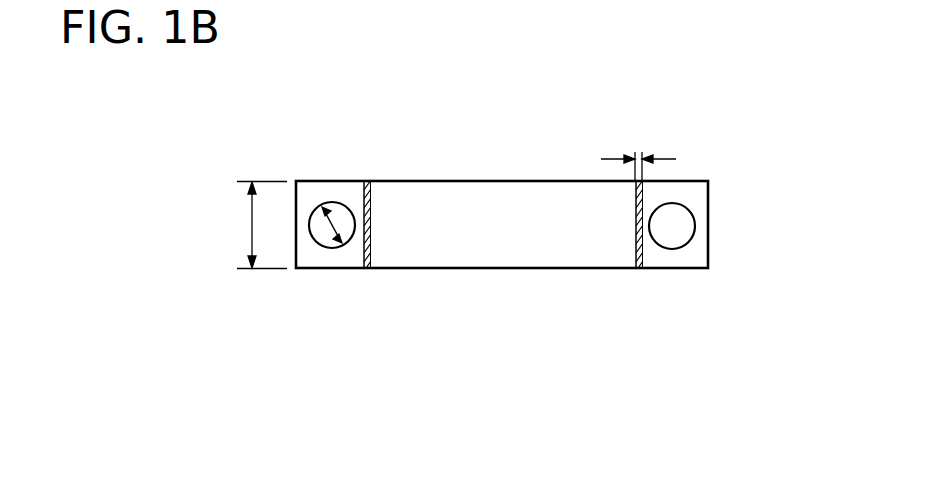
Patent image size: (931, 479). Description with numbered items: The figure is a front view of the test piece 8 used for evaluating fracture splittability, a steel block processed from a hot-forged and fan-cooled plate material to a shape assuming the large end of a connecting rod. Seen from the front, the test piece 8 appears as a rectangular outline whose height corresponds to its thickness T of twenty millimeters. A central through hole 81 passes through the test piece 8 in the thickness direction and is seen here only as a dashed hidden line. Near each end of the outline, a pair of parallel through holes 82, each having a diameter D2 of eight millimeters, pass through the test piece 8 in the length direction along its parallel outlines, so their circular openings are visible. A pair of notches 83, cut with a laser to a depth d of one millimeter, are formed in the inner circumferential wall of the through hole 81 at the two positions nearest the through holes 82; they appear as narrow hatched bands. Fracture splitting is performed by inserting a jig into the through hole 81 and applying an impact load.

The test piece 8 is at (701, 136).
The through hole 81 is at (372, 242).
The through holes 82 is at (309, 238).
The notches 83 is at (367, 268).
The diameter D2 is at (340, 203).
The thickness T is at (254, 225).
The depth d is at (638, 151).